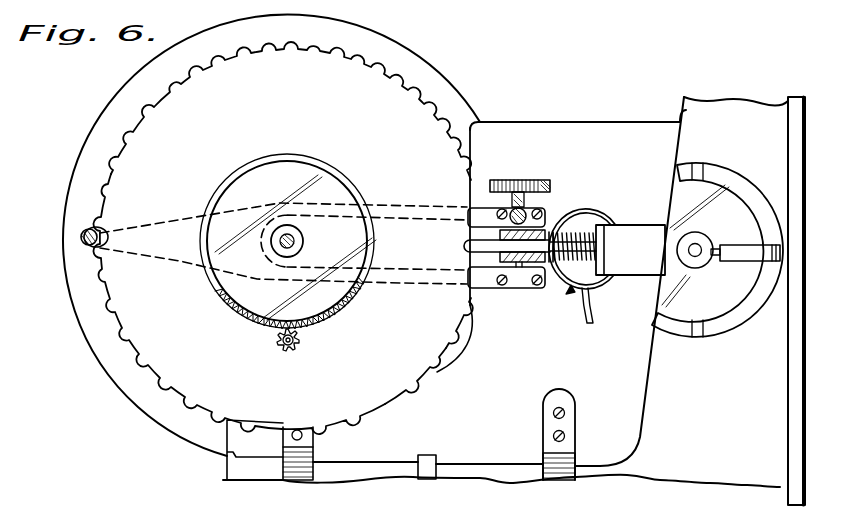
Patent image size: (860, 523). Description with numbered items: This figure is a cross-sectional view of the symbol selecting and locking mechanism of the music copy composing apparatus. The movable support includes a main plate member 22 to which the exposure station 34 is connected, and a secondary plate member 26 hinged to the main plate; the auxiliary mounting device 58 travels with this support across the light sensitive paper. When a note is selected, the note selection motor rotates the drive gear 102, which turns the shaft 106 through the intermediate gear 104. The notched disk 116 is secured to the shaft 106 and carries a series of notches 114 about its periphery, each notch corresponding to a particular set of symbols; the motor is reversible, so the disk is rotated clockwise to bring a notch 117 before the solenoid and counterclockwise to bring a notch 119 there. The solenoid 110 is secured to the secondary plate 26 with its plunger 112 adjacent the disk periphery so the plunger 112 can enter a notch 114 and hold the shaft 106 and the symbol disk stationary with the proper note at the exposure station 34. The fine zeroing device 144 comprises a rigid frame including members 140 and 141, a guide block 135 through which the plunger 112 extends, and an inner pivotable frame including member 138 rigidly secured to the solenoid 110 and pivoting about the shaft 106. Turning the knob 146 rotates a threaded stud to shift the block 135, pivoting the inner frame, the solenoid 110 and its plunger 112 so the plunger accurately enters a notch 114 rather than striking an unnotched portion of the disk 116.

The notch 117 is at (407, 97).
The secondary plate member 26 is at (627, 140).
The main plate member 22 is at (712, 461).
The fine zeroing device 144 is at (513, 178).
The knob 146 is at (558, 172).
The guide block 135 is at (540, 210).
The inner pivotable frame member 138 is at (578, 235).
The shaft 106 is at (299, 239).
The rigid frame member 141 is at (80, 243).
The rigid frame member 140 is at (193, 264).
The intermediate gear 104 is at (325, 318).
The solenoid plunger 112 is at (480, 288).
The solenoid 110 is at (634, 260).
The exposure station 34 is at (571, 285).
The notches 114 is at (438, 370).
The drive gear 102 is at (292, 352).
The notched disk 116 is at (402, 362).
The notch 119 is at (327, 437).
The auxiliary mounting device 58 is at (721, 300).